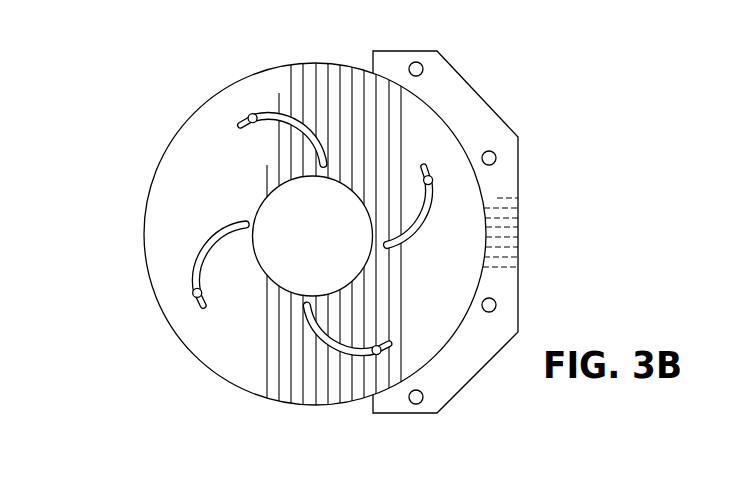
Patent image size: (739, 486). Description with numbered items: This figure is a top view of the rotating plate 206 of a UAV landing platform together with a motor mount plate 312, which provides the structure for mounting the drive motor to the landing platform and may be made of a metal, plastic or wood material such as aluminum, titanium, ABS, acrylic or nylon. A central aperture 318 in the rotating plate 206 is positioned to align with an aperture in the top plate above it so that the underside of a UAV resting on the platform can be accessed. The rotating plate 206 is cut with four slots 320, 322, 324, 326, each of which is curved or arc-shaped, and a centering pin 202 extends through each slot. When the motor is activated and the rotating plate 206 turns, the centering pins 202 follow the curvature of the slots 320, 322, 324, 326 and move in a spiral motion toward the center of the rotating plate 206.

The centering pins 202 is at (249, 117).
The rotating plate 206 is at (185, 185).
The motor mount plate 312 is at (518, 190).
The aperture 318 is at (326, 247).
The slot 320 is at (485, 211).
The slot 322 is at (330, 341).
The slot 324 is at (197, 258).
The slot 326 is at (286, 117).